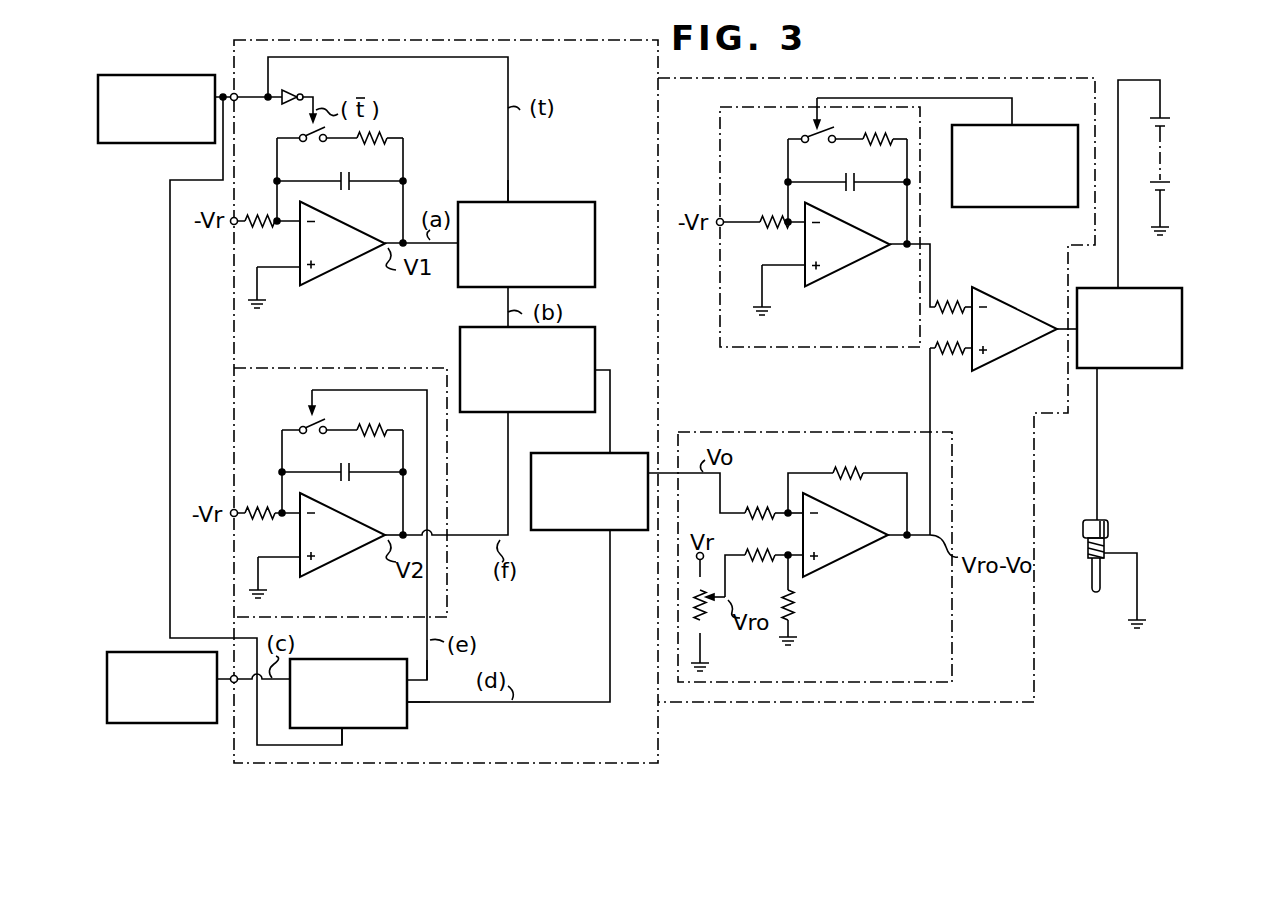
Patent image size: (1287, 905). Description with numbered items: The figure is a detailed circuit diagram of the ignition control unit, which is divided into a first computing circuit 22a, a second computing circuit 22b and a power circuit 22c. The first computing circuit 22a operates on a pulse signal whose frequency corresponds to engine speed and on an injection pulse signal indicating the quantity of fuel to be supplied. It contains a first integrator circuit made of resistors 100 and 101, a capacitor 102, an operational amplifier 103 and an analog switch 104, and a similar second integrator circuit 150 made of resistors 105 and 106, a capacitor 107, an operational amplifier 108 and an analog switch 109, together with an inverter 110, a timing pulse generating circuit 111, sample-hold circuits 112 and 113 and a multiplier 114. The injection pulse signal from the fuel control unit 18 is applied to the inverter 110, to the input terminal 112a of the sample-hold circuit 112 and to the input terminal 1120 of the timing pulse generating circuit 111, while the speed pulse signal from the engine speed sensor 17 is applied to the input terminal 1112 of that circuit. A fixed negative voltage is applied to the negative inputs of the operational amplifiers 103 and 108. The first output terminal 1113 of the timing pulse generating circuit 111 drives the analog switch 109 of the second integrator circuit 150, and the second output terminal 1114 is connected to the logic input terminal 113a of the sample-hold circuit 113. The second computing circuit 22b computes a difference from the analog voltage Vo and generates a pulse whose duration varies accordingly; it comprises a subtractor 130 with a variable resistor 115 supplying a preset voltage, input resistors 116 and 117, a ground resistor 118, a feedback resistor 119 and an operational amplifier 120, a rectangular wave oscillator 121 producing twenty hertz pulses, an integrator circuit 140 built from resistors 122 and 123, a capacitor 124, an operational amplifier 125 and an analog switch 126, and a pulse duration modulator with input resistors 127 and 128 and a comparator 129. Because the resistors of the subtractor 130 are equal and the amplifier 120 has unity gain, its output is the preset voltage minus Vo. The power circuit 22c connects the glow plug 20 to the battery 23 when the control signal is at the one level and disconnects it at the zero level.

The engine speed sensor 17 is at (145, 723).
The fuel control unit 18 is at (150, 143).
The glow plug 20 is at (1110, 533).
The first computing circuit 22a is at (658, 745).
The second computing circuit 22b is at (1034, 700).
The power circuit 22c is at (1182, 348).
The battery 23 is at (1167, 160).
The resistor 100 is at (260, 226).
The resistor 101 is at (372, 144).
The capacitor 102 is at (347, 190).
The operational amplifier 103 is at (352, 268).
The analog switch 104 is at (310, 142).
The resistor 105 is at (262, 508).
The resistor 106 is at (372, 436).
The capacitor 107 is at (347, 481).
The operational amplifier 108 is at (352, 560).
The analog switch 109 is at (310, 434).
The inverter 110 is at (303, 93).
The timing pulse generating circuit 111 is at (400, 730).
The sample-hold circuit 112 is at (596, 240).
The input terminal 112a is at (510, 200).
The sample-hold circuit 113 is at (630, 532).
The input terminal 113a is at (605, 532).
The multiplier 114 is at (595, 345).
The variable resistor 115 is at (705, 628).
The input resistor 116 is at (765, 507).
The input resistor 117 is at (760, 549).
The ground resistor 118 is at (794, 605).
The feedback resistor 119 is at (852, 468).
The operational amplifier 120 is at (848, 522).
The rectangular wave oscillator 121 is at (1055, 207).
The resistor 122 is at (775, 216).
The resistor 123 is at (883, 135).
The capacitor 124 is at (855, 180).
The operational amplifier 125 is at (868, 262).
The analog switch 126 is at (818, 143).
The input resistor 127 is at (952, 300).
The input resistor 128 is at (952, 354).
The comparator 129 is at (1020, 308).
The subtractor 130 is at (953, 440).
The integrator circuit 140 is at (862, 348).
The second integrator circuit 150 is at (447, 602).
The input terminal 1112 is at (288, 683).
The first output terminal 1113 is at (428, 659).
The second output terminal 1114 is at (410, 706).
The input terminal 1120 is at (344, 732).